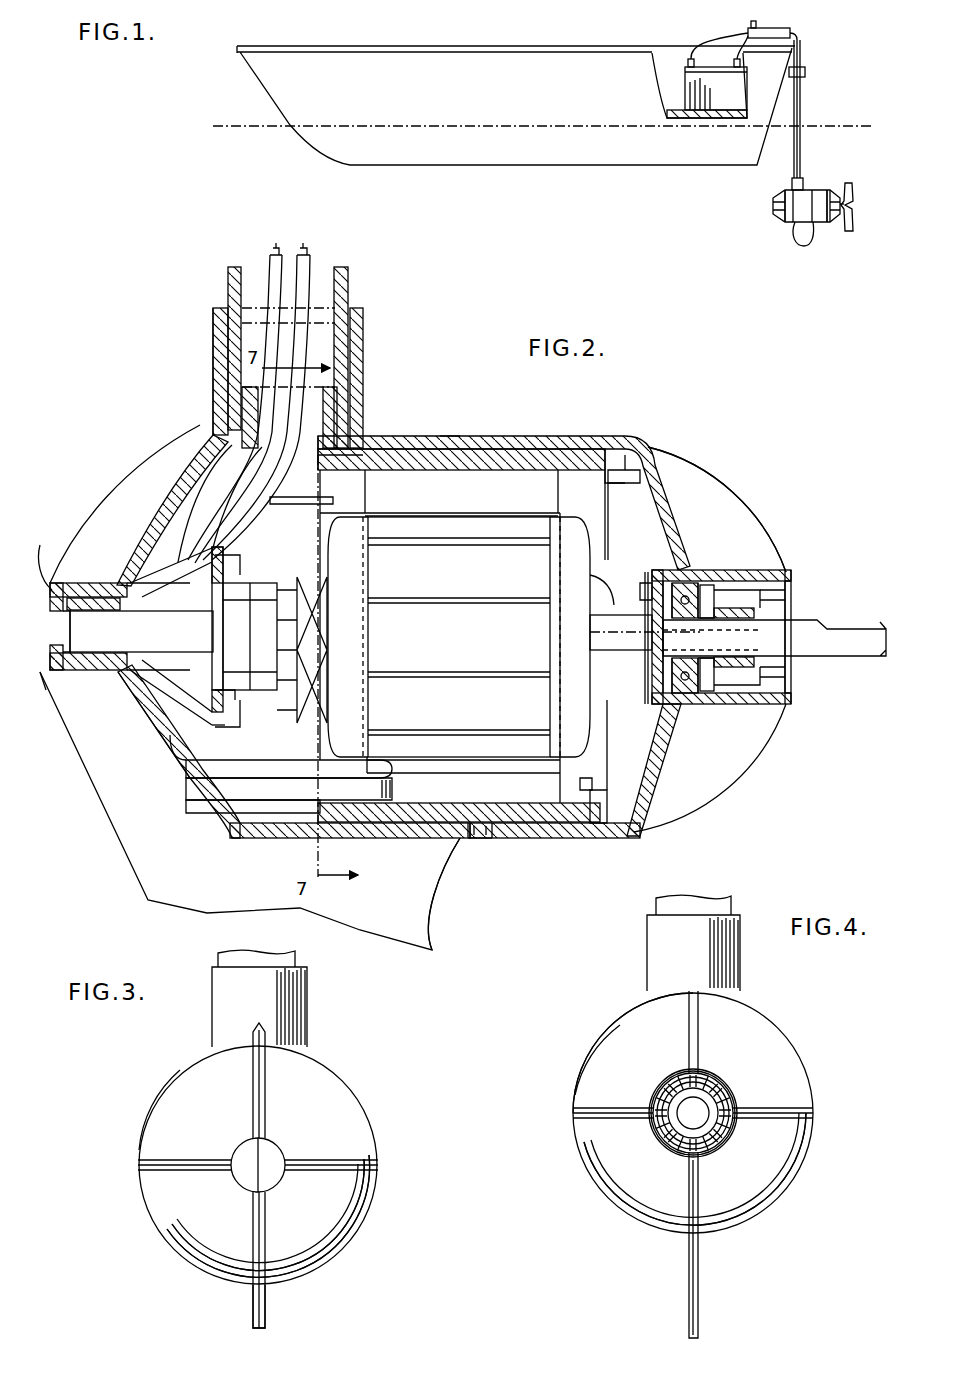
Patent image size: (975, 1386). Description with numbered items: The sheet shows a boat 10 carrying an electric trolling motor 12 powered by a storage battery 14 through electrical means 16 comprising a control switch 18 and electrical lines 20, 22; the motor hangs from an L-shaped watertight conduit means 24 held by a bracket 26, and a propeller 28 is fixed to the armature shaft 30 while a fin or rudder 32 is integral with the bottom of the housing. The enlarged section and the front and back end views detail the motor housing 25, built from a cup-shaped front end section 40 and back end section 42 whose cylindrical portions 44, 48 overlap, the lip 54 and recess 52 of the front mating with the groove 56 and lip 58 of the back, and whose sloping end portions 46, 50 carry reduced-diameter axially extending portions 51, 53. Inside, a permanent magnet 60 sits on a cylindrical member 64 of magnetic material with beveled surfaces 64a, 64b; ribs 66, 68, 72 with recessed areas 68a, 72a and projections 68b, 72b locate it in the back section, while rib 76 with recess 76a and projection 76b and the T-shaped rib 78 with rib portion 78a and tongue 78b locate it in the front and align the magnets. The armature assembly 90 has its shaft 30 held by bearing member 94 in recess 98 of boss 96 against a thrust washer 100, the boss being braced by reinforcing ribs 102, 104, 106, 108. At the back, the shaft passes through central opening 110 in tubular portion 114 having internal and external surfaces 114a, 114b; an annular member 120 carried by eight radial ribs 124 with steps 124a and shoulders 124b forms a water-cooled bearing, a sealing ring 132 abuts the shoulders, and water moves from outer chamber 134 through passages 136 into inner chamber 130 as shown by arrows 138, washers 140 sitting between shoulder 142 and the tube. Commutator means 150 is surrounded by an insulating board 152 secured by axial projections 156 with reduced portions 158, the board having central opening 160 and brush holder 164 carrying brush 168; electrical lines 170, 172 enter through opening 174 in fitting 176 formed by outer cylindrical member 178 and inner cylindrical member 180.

In FIG. 1, the boat 10 is at (463, 43).
In FIG. 1, the trolling motor 12 is at (771, 195).
In FIG. 2, the trolling motor 12 is at (539, 434).
In FIG. 3, the trolling motor 12 is at (358, 1084).
In FIG. 4, the trolling motor 12 is at (811, 1057).
In FIG. 1, the storage battery 14 is at (700, 85).
In FIG. 1, the electrical means 16 is at (766, 29).
In FIG. 1, the control switch 18 is at (750, 28).
In FIG. 1, the electrical line 20 is at (740, 51).
In FIG. 1, the electrical line 22 is at (700, 47).
In FIG. 1, the watertight conduit means 24 is at (800, 112).
In FIG. 2, the watertight conduit means 24 is at (352, 292).
In FIG. 3, the watertight conduit means 24 is at (220, 958).
In FIG. 4, the watertight conduit means 24 is at (733, 904).
In FIG. 1, the motor housing 25 is at (812, 186).
In FIG. 2, the motor housing 25 is at (440, 432).
In FIG. 3, the motor housing 25 is at (142, 1122).
In FIG. 4, the motor housing 25 is at (607, 1020).
In FIG. 1, the bracket 26 is at (805, 72).
In FIG. 1, the propeller 28 is at (852, 186).
In FIG. 1, the armature shaft 30 is at (856, 207).
In FIG. 2, the armature shaft 30 is at (140, 626).
In FIG. 4, the armature shaft 30 is at (686, 1120).
In FIG. 1, the fin or rudder 32 is at (803, 238).
In FIG. 2, the fin or rudder 32 is at (431, 930).
In FIG. 3, the fin or rudder 32 is at (252, 1298).
In FIG. 4, the fin or rudder 32 is at (688, 1293).
In FIG. 1, the front end section 40 is at (798, 216).
In FIG. 2, the front end section 40 is at (213, 840).
In FIG. 3, the front end section 40 is at (150, 1195).
In FIG. 1, the back end section 42 is at (820, 215).
In FIG. 2, the back end section 42 is at (565, 840).
In FIG. 4, the back end section 42 is at (585, 1168).
In FIG. 2, the cylindrical portion 44 is at (420, 840).
In FIG. 3, the cylindrical portion 44 is at (368, 1215).
In FIG. 2, the end portion 46 is at (152, 741).
In FIG. 3, the end portion 46 is at (200, 1220).
In FIG. 2, the cylindrical portion 48 is at (568, 436).
In FIG. 4, the cylindrical portion 48 is at (790, 1185).
In FIG. 2, the end portion 50 is at (712, 476).
In FIG. 4, the end portion 50 is at (630, 1065).
In FIG. 2, the axially extending portion 51 is at (47, 702).
In FIG. 3, the axially extending portion 51 is at (245, 1145).
In FIG. 2, the internal annular recess 52 is at (476, 822).
In FIG. 2, the axially extending portion 53 is at (793, 705).
In FIG. 4, the axially extending portion 53 is at (715, 1150).
In FIG. 2, the end lip 54 is at (475, 839).
In FIG. 2, the external annular groove 56 is at (491, 840).
In FIG. 2, the lip 58 is at (494, 822).
In FIG. 2, the permanent magnet 60 is at (478, 504).
In FIG. 2, the cylindrical member 64 is at (505, 455).
In FIG. 2, the beveled surface 64a is at (318, 812).
In FIG. 2, the beveled surface 64b is at (603, 445).
In FIG. 2, the rib 66 is at (560, 628).
In FIG. 2, the rib 68 is at (632, 462).
In FIG. 2, the recessed area 68a is at (600, 478).
In FIG. 2, the projection 68b is at (600, 485).
In FIG. 2, the rib 72 is at (603, 826).
In FIG. 2, the recessed area 72a is at (607, 800).
In FIG. 2, the projection 72b is at (586, 789).
In FIG. 2, the rib 76 is at (205, 458).
In FIG. 2, the recessed area 76a is at (332, 440).
In FIG. 2, the projection 76b is at (345, 500).
In FIG. 2, the rib 78 is at (245, 815).
In FIG. 2, the rib portion 78a is at (222, 808).
In FIG. 2, the tongue 78b is at (340, 770).
In FIG. 2, the armature assembly 90 is at (441, 631).
In FIG. 2, the bearing member 94 is at (84, 584).
In FIG. 2, the axial portion 96 is at (72, 683).
In FIG. 3, the axial portion 96 is at (278, 1145).
In FIG. 2, the recess 98 is at (100, 671).
In FIG. 2, the thrust washer 100 is at (45, 578).
In FIG. 2, the reinforcing rib 102 is at (150, 476).
In FIG. 3, the reinforcing rib 102 is at (252, 1068).
In FIG. 3, the reinforcing rib 104 is at (318, 1162).
In FIG. 2, the reinforcing rib 106 is at (105, 780).
In FIG. 3, the reinforcing rib 106 is at (265, 1232).
In FIG. 3, the reinforcing rib 108 is at (170, 1162).
In FIG. 2, the central opening 110 is at (700, 705).
In FIG. 2, the tubular portion 114 is at (742, 572).
In FIG. 4, the tubular portion 114 is at (718, 1080).
In FIG. 2, the internal axial cylindrical portion 114a is at (660, 572).
In FIG. 2, the external axial cylindrical portion 114b is at (782, 572).
In FIG. 4, the external axial cylindrical portion 114b is at (665, 1075).
In FIG. 2, the annular member 120 is at (760, 612).
In FIG. 4, the annular member 120 is at (728, 1105).
In FIG. 2, the radially extending rib 124 is at (735, 590).
In FIG. 4, the radially extending rib 124 is at (705, 1075).
In FIG. 2, the step 124a is at (690, 583).
In FIG. 2, the shoulder 124b is at (690, 583).
In FIG. 2, the annular chamber 130 is at (648, 672).
In FIG. 2, the sealing ring 132 is at (650, 700).
In FIG. 4, the sealing ring 132 is at (735, 1085).
In FIG. 2, the annular chamber 134 is at (790, 660).
In FIG. 2, the passage 136 is at (707, 588).
In FIG. 4, the passage 136 is at (685, 1080).
In FIG. 2, the arrows 138 is at (780, 600).
In FIG. 2, the washers 140 is at (643, 586).
In FIG. 2, the shoulder 142 is at (600, 596).
In FIG. 2, the commutator means 150 is at (258, 691).
In FIG. 2, the insulating board 152 is at (215, 729).
In FIG. 2, the axial projection 156 is at (178, 531).
In FIG. 2, the reduced diameter portion 158 is at (240, 556).
In FIG. 2, the central opening 160 is at (215, 618).
In FIG. 2, the brush holder 164 is at (224, 692).
In FIG. 2, the brush 168 is at (282, 582).
In FIG. 2, the electrical line 170 is at (305, 285).
In FIG. 2, the electrical line 172 is at (270, 285).
In FIG. 2, the opening 174 is at (340, 400).
In FIG. 2, the fitting 176 is at (364, 335).
In FIG. 3, the fitting 176 is at (258, 994).
In FIG. 4, the fitting 176 is at (701, 959).
In FIG. 2, the outer extended cylindrical member 178 is at (213, 346).
In FIG. 3, the outer extended cylindrical member 178 is at (300, 1001).
In FIG. 4, the outer extended cylindrical member 178 is at (648, 936).
In FIG. 2, the inner foreshortened cylindrical member 180 is at (245, 406).